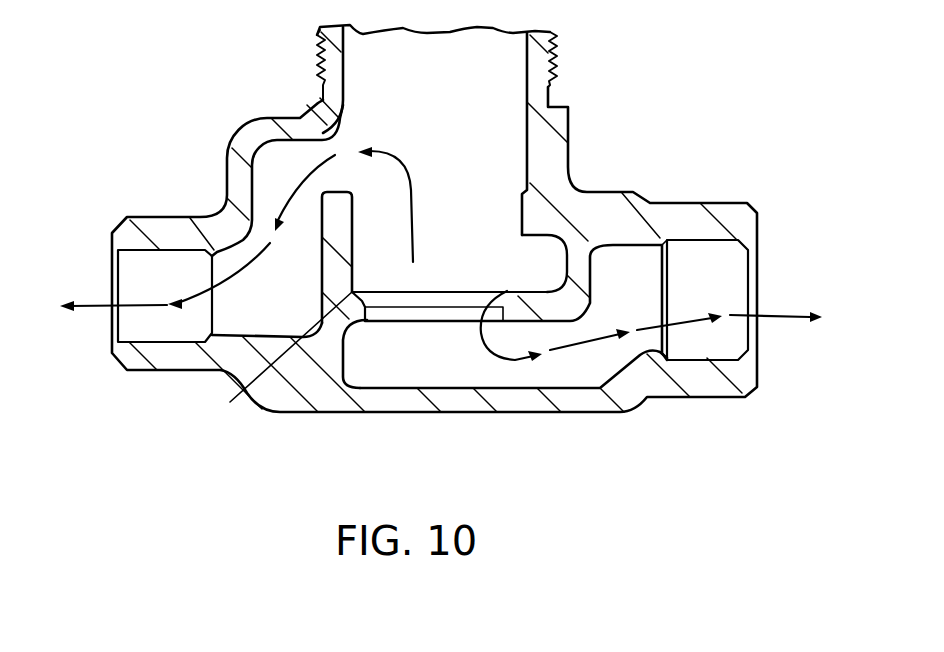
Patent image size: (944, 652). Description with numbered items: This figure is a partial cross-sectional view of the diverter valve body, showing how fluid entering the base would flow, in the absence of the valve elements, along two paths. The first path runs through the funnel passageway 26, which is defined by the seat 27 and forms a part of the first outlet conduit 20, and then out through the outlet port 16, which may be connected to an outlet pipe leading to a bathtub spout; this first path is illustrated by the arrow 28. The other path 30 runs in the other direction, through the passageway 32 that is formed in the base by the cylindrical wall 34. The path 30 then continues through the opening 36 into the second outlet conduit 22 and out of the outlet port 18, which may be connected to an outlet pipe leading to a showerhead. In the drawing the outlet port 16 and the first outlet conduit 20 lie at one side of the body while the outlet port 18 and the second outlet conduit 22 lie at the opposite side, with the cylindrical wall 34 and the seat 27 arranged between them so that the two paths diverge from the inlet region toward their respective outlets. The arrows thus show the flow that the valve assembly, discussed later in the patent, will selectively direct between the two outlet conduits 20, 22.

The outlet port 16 is at (700, 382).
The outlet port 18 is at (173, 362).
The first outlet conduit 20 is at (467, 373).
The second outlet conduit 22 is at (282, 192).
The funnel passageway 26 is at (427, 300).
The seat 27 is at (277, 365).
The arrow 28 is at (522, 284).
The path 30 is at (99, 302).
The passageway 32 is at (452, 200).
The cylindrical wall 34 is at (347, 228).
The opening 36 is at (330, 133).